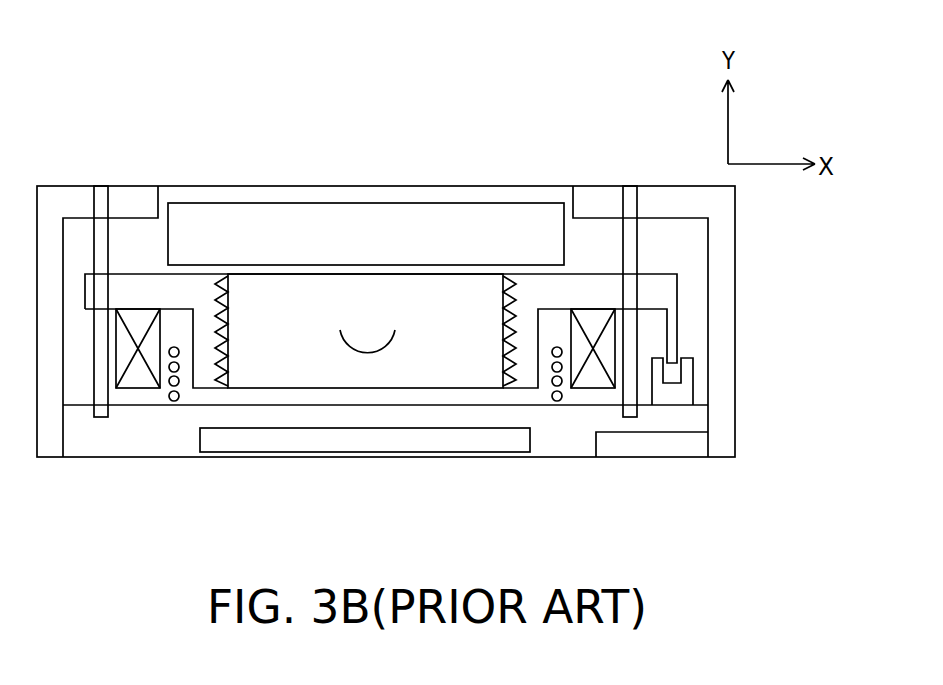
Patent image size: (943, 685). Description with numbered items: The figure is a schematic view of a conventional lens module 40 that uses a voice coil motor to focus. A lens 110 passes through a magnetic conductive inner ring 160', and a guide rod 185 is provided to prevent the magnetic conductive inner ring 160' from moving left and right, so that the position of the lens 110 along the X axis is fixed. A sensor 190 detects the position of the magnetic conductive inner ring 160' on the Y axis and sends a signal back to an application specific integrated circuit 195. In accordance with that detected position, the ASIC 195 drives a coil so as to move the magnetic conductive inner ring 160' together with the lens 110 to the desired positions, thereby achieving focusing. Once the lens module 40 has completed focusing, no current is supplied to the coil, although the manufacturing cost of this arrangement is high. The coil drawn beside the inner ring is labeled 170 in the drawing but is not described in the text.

The conventional lens module 40 is at (560, 527).
The lens 110 is at (430, 220).
The guide rod 185 is at (632, 236).
The magnetic conductive inner ring 160' is at (440, 337).
The coil 170 is at (138, 378).
The sensor 190 is at (685, 397).
The application specific integrated circuit (ASIC) 195 is at (693, 445).